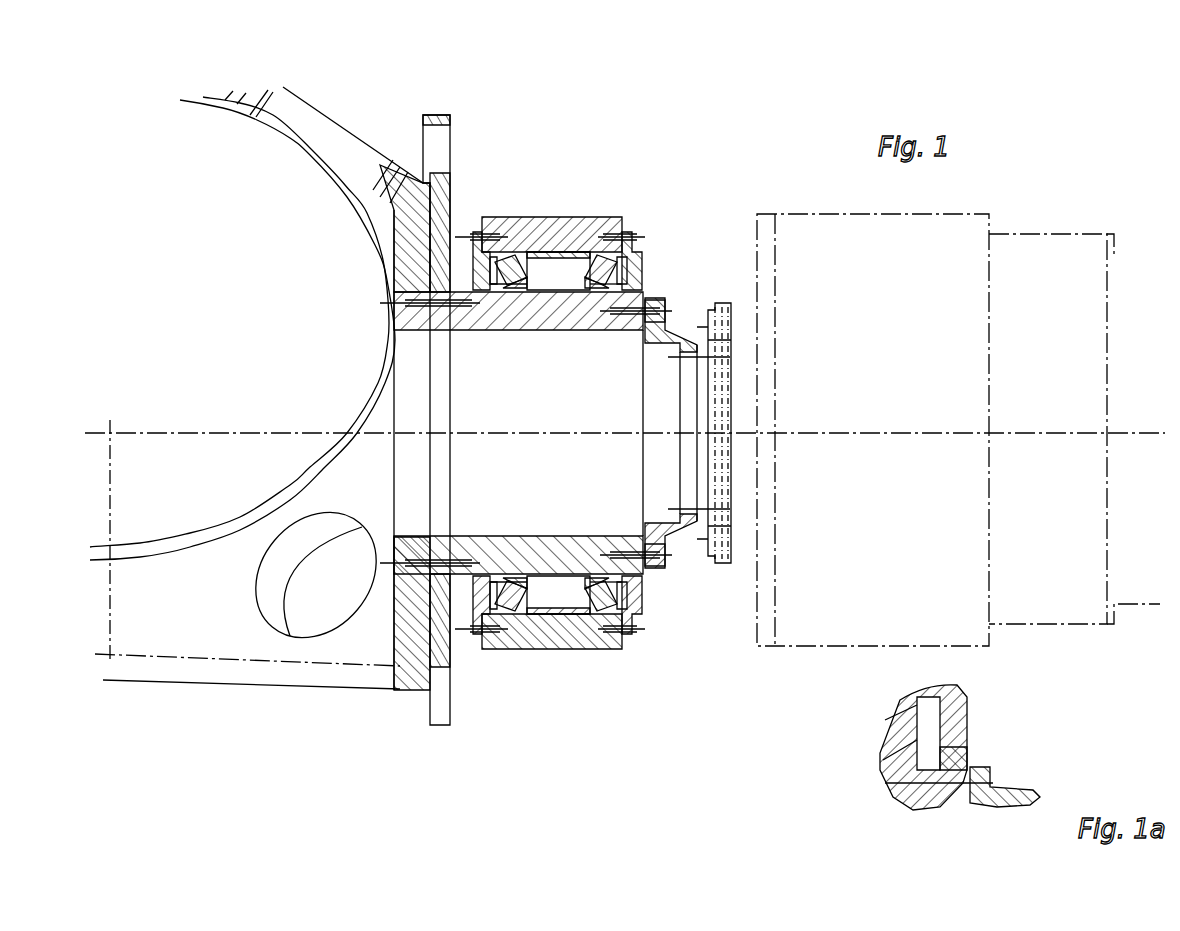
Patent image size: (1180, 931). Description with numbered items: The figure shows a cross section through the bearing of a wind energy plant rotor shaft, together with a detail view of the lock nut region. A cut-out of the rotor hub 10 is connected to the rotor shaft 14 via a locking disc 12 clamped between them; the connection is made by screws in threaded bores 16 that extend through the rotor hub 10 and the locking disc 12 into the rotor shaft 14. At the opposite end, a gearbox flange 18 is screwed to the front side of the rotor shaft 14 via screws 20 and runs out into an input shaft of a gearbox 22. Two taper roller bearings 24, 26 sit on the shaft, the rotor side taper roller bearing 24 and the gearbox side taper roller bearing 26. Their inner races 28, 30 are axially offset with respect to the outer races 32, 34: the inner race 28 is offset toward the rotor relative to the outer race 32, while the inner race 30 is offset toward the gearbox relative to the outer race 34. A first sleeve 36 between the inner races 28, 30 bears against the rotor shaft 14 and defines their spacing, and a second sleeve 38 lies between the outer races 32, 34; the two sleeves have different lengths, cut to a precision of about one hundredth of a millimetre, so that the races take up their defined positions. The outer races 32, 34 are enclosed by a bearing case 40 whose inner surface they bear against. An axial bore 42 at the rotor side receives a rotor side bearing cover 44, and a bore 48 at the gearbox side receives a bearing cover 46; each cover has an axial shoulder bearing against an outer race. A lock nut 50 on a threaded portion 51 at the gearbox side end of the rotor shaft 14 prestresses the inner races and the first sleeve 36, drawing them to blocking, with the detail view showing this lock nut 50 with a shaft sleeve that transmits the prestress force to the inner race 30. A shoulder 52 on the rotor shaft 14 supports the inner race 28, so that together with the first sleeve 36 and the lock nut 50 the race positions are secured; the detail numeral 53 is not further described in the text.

In FIG. 1, the rotor hub 10 is at (310, 673).
In FIG. 1, the locking disc 12 is at (447, 657).
In FIG. 1, the rotor shaft 14 is at (640, 572).
In FIG. 1A, the rotor shaft 14 is at (923, 800).
In FIG. 1, the threaded bores 16 is at (395, 567).
In FIG. 1, the gearbox flange 18 is at (665, 330).
In FIG. 1A, the gearbox flange 18 is at (1040, 797).
In FIG. 1, the screws 20 is at (663, 548).
In FIG. 1, the gearbox 22 is at (868, 518).
In FIG. 1, the rotor side taper roller bearing 24 is at (507, 257).
In FIG. 1, the gearbox side taper roller bearing 26 is at (593, 253).
In FIG. 1, the inner race 28 is at (477, 287).
In FIG. 1, the inner race 30 is at (633, 287).
In FIG. 1A, the inner race 30 is at (897, 771).
In FIG. 1, the outer race 32 is at (505, 253).
In FIG. 1, the outer race 34 is at (637, 257).
In FIG. 1, the first sleeve 36 is at (573, 257).
In FIG. 1, the second sleeve 38 is at (553, 253).
In FIG. 1, the bearing case 40 is at (577, 640).
In FIG. 1, the axial bore 42 is at (487, 627).
In FIG. 1, the rotor side bearing cover 44 is at (497, 627).
In FIG. 1, the bearing cover 46 is at (632, 585).
In FIG. 1, the bore 48 is at (633, 627).
In FIG. 1, the lock nut 50 is at (650, 287).
In FIG. 1A, the lock nut 50 is at (970, 770).
In FIG. 1A, the threaded portion 51 is at (983, 783).
In FIG. 1, the shoulder 52 is at (478, 537).
In FIG. 1A, the spring element 53 is at (970, 757).